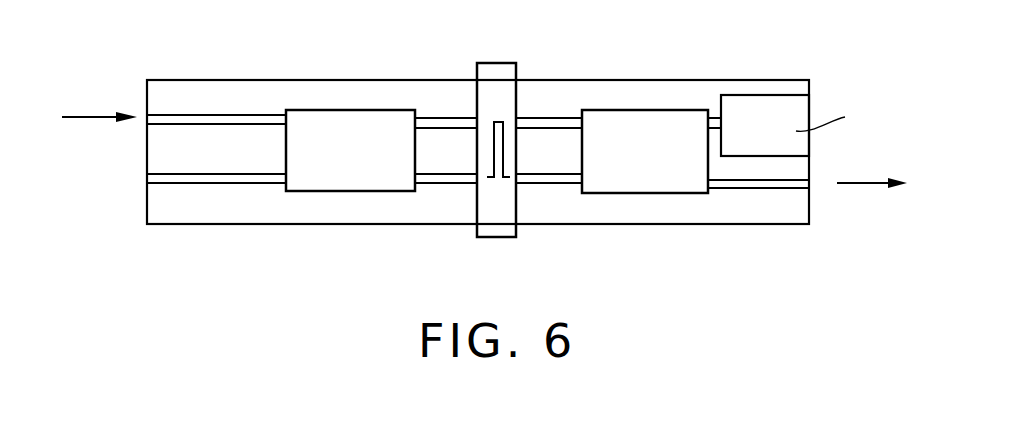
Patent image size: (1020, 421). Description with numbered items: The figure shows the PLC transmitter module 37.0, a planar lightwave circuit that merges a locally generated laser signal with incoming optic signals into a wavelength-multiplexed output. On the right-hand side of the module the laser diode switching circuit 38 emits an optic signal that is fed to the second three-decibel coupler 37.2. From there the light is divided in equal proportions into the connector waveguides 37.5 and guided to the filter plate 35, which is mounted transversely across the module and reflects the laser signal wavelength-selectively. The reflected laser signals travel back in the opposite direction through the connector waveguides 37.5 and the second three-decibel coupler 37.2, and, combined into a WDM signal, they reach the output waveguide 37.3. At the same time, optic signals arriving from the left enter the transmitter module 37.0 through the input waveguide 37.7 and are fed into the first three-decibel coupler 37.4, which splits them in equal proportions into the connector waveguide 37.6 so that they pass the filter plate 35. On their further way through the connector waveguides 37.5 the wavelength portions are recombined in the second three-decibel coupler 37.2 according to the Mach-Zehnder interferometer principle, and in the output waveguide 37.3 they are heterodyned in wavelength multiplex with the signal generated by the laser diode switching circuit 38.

The PLC transmitter module 37.0 is at (160, 79).
The input waveguide 37.7 is at (240, 115).
The first 3 dB coupler 37.4 is at (357, 110).
The connector waveguide 37.6 is at (462, 130).
The filter plate 35 is at (495, 75).
The connector waveguides 37.5 is at (567, 130).
The second 3 dB coupler 37.2 is at (655, 110).
The laser diode switching circuit 38 is at (794, 103).
The output waveguide 37.3 is at (758, 187).